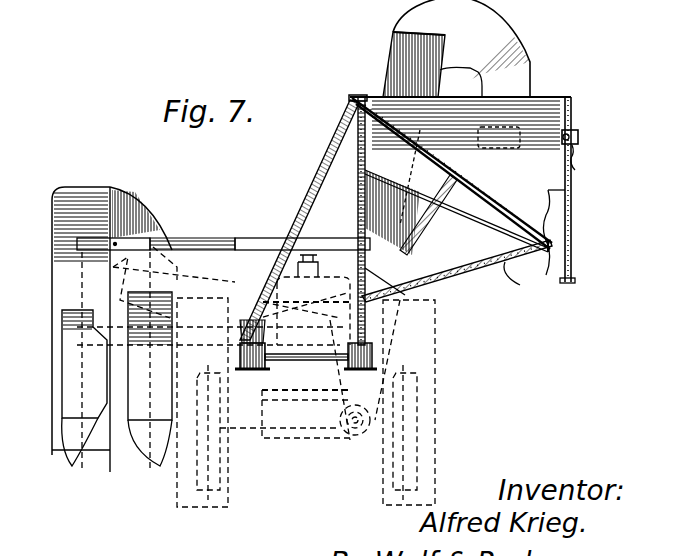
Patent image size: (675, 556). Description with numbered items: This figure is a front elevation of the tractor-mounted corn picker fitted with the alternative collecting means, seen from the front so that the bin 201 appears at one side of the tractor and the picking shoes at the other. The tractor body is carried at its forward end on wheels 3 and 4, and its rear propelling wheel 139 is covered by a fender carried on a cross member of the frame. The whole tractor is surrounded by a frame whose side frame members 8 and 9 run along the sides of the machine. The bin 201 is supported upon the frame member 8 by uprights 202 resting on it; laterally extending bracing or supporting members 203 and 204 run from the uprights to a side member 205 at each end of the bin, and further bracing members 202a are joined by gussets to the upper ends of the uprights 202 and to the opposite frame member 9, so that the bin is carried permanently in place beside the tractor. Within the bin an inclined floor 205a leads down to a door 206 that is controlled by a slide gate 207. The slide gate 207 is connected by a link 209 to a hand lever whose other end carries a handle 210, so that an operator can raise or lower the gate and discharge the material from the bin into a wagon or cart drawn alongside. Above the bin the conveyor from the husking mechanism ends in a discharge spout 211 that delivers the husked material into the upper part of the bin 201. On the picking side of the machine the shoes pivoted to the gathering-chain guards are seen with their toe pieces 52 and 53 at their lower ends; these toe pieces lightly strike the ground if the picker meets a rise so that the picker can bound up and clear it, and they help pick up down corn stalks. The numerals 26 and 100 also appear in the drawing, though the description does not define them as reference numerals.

The hopper hood 26 is at (395, 25).
The discharge spout 211 is at (520, 85).
The bin 201 is at (540, 137).
The handle 210 is at (578, 137).
The link 209 is at (576, 170).
The slide gate 207 is at (571, 245).
The door 206 is at (574, 276).
The side member 205 is at (480, 200).
The inclined floor 205a is at (515, 285).
The bracing member 204 is at (465, 268).
The bracing member 203 is at (420, 225).
The upright 202 is at (366, 160).
The bracing member 202a is at (302, 211).
The frame member 8 is at (372, 358).
The frame member 9 is at (240, 356).
The tractor propelling wheel 139 is at (428, 397).
The wheel 3 is at (410, 468).
The wheel 4 is at (218, 480).
The wheel 100 is at (190, 490).
The toe piece 53 is at (70, 462).
The toe piece 52 is at (165, 465).